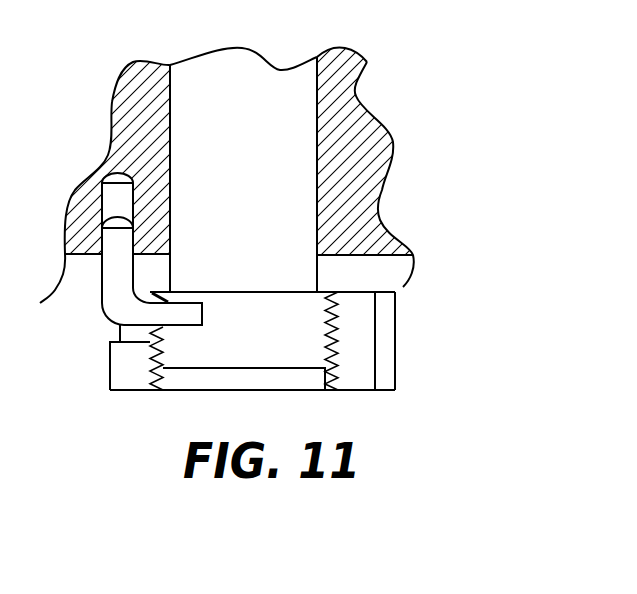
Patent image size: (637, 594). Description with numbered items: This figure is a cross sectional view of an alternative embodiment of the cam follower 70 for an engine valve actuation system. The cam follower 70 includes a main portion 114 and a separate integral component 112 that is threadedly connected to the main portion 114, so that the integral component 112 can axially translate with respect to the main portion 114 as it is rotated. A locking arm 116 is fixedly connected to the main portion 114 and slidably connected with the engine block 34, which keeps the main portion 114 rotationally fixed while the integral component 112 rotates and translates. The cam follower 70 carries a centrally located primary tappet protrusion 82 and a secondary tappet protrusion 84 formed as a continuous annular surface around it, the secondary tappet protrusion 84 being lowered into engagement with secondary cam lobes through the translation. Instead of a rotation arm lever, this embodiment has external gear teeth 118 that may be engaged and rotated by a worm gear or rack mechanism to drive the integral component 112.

The cam follower 70 is at (437, 106).
The engine block 34 is at (120, 141).
The main portion 114 is at (281, 79).
The locking arm 116 is at (108, 300).
The integral component 112 is at (110, 368).
The secondary tappet protrusion 84 is at (130, 392).
The primary tappet protrusion 82 is at (250, 393).
The external gear teeth 118 is at (396, 335).